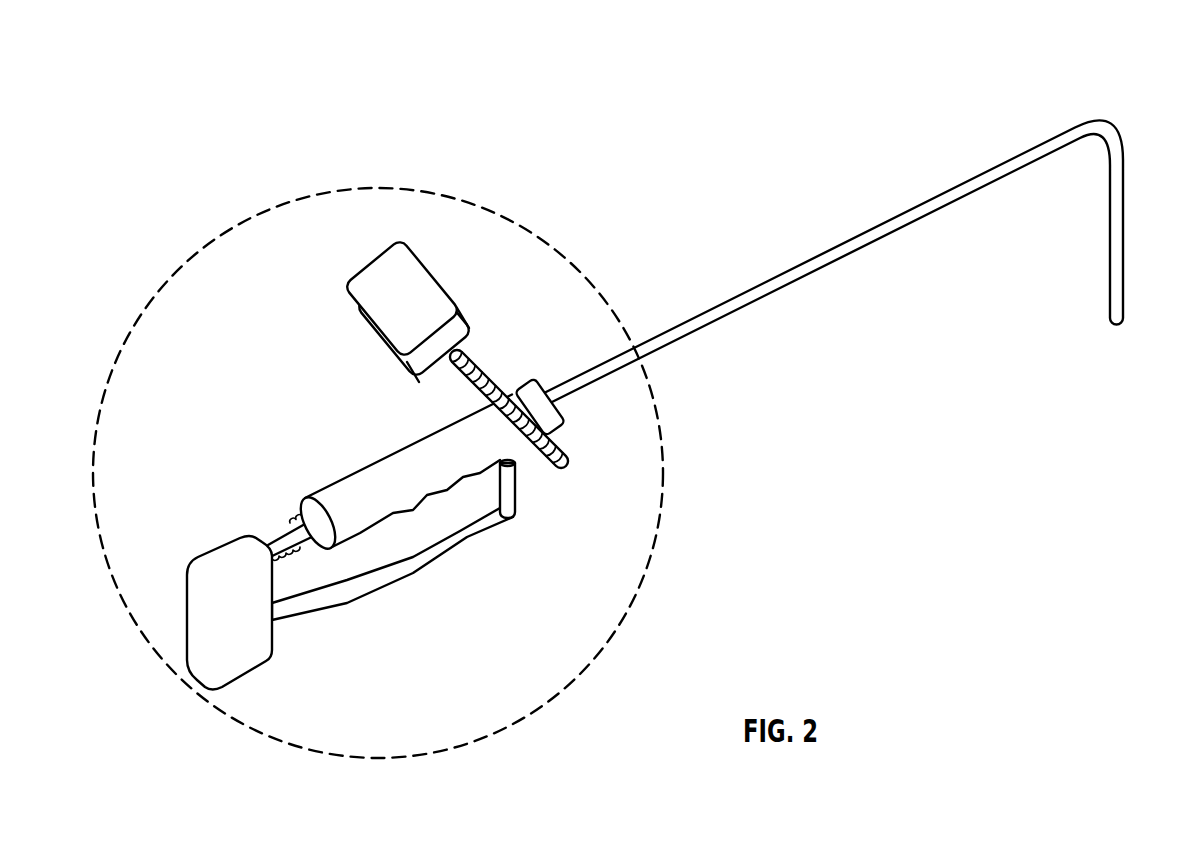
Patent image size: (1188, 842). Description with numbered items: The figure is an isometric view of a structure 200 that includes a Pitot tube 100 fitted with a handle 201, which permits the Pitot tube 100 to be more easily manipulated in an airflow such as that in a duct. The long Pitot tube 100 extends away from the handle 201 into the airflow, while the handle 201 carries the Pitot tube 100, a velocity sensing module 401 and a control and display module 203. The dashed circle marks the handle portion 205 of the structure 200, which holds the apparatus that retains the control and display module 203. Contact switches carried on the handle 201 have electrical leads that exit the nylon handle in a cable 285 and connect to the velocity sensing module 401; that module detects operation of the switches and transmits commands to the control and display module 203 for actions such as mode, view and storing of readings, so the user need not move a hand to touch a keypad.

The Pitot tube 100 is at (957, 183).
The structure 200 is at (518, 473).
The handle 201 is at (395, 522).
The control and display module 203 is at (395, 278).
The handle portion 205 is at (393, 188).
The cable 285 is at (295, 553).
The velocity sensing module 401 is at (238, 582).